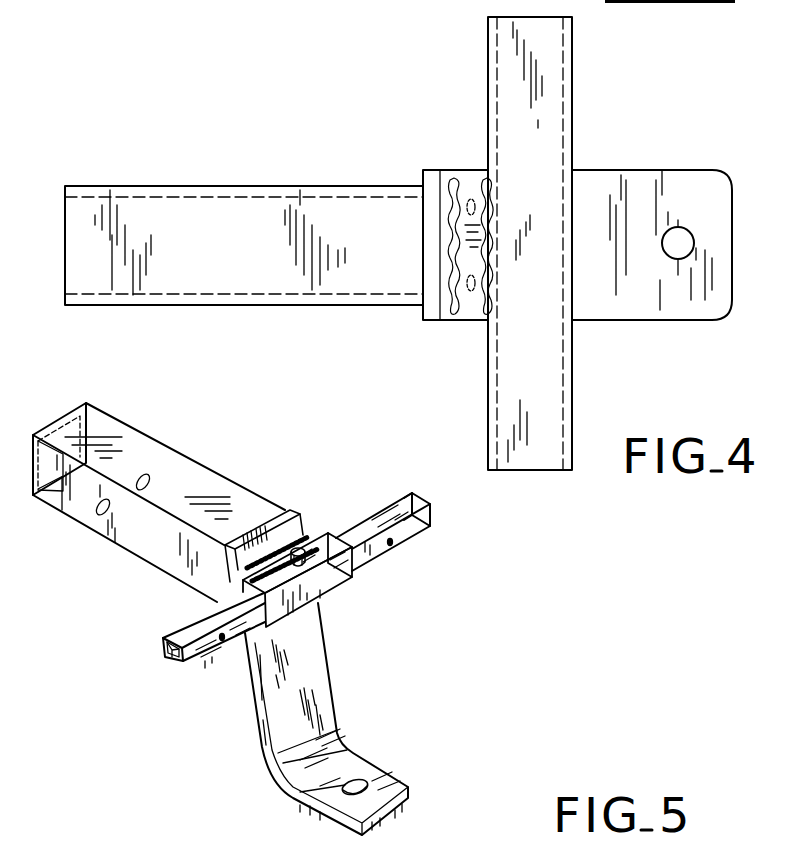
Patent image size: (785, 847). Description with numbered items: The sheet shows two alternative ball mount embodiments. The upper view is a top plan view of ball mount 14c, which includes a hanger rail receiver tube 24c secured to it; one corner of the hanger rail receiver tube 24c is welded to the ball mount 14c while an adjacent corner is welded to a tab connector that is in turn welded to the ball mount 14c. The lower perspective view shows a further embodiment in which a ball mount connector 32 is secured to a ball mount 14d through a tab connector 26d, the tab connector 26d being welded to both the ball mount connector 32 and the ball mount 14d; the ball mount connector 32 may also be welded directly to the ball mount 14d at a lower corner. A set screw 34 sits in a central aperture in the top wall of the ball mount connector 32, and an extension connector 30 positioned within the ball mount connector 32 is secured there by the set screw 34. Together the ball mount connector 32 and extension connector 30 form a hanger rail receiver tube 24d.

In FIG. 4, the ball mount 14c is at (411, 104).
In FIG. 4, the hanger rail receiver tube 24c is at (563, 58).
In FIG. 5, the ball mount 14d is at (284, 456).
In FIG. 5, the hanger rail receiver tube 24d is at (390, 571).
In FIG. 5, the tab connector 26d is at (304, 534).
In FIG. 5, the extension connector 30 is at (432, 521).
In FIG. 5, the ball mount connector 32 is at (344, 578).
In FIG. 5, the set screw 34 is at (306, 563).